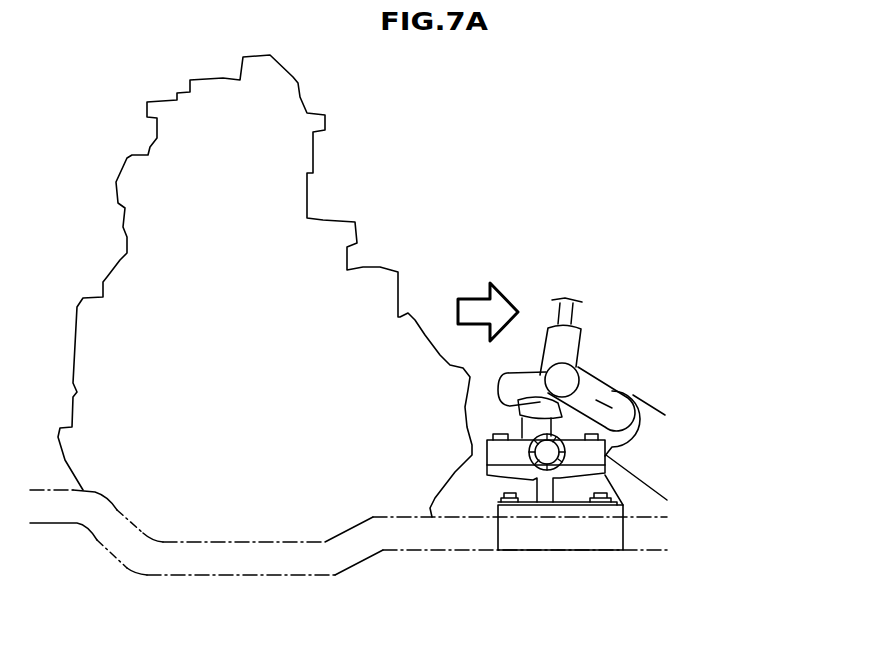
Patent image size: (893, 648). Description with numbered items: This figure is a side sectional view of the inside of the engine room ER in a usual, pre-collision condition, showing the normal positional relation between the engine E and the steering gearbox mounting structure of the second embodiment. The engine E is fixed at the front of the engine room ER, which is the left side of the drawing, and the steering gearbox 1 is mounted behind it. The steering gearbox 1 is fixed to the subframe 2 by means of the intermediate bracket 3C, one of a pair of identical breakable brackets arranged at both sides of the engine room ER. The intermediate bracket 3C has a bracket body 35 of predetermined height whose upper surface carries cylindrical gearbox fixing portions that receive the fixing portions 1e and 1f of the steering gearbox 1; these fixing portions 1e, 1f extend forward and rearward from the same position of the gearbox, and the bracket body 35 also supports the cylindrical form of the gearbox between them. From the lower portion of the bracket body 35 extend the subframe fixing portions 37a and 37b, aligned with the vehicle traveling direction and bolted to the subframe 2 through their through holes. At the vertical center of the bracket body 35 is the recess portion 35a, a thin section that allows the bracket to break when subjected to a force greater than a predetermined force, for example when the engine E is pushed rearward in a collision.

The steering gearbox 1 is at (654, 399).
The fixing portion 1e is at (499, 436).
The fixing portion 1f is at (605, 456).
The subframe 2 is at (507, 527).
The intermediate bracket 3C is at (605, 475).
The bracket body 35 is at (495, 471).
The recess portion 35a is at (558, 467).
The subframe fixing portion 37a is at (510, 502).
The subframe fixing portion 37b is at (608, 502).
The engine E is at (280, 175).
The engine room ER is at (122, 109).